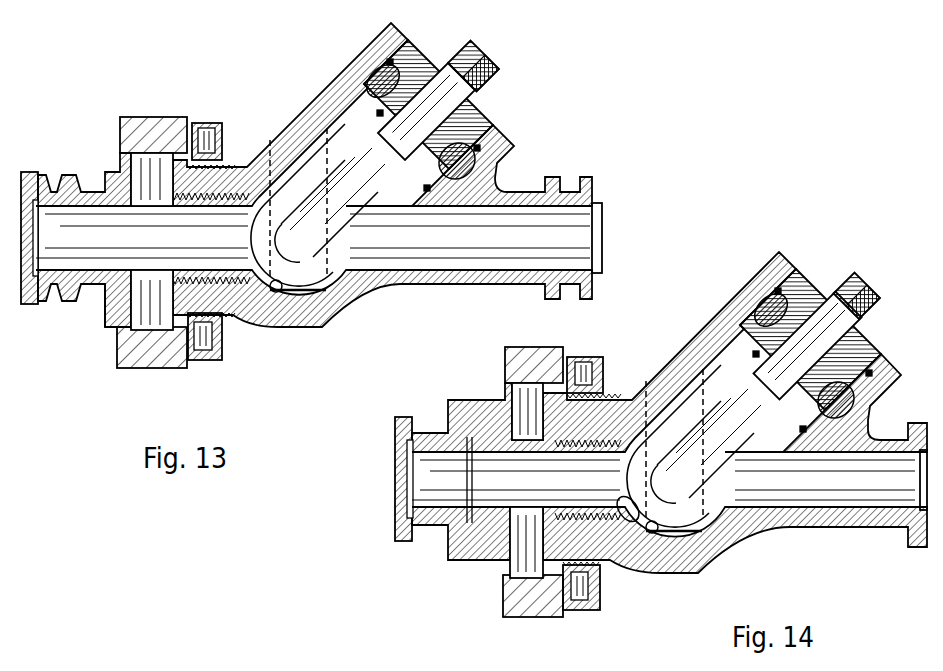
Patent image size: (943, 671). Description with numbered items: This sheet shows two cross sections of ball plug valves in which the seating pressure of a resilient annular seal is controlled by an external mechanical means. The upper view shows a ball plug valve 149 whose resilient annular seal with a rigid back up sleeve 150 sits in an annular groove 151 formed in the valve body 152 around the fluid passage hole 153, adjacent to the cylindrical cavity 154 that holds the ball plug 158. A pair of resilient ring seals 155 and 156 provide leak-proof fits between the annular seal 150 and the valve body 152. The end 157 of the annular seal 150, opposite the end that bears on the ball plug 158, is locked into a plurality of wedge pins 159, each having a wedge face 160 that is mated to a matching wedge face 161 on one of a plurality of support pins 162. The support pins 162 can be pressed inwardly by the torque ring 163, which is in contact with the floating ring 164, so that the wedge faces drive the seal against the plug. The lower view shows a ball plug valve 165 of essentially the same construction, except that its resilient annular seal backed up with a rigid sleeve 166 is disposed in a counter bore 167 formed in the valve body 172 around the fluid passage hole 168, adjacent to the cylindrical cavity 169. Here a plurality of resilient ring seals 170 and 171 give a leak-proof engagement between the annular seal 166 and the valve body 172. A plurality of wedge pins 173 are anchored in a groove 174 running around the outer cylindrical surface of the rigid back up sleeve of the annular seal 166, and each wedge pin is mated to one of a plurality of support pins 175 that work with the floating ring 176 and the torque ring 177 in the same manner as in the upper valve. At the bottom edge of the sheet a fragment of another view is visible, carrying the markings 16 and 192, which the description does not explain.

In FIG. 13, the ball plug valve 149 is at (279, 293).
In FIG. 13, the resilient annular seal with rigid back up sleeve 150 is at (150, 283).
In FIG. 13, the annular groove 151 is at (57, 290).
In FIG. 13, the valve body 152 is at (340, 300).
In FIG. 13, the fluid passage hole 153 is at (78, 236).
In FIG. 13, the cylindrical cavity 154 is at (272, 300).
In FIG. 13, the resilient ring seal 155 is at (158, 355).
In FIG. 13, the resilient ring seal 156 is at (232, 316).
In FIG. 13, the end of resilient annular seal 157 is at (240, 166).
In FIG. 13, the ball plug 158 is at (405, 285).
In FIG. 13, the wedge pin 159 is at (135, 366).
In FIG. 13, the wedge face 160 is at (110, 170).
In FIG. 13, the wedge face 161 is at (163, 152).
In FIG. 13, the support pin 162 is at (135, 312).
In FIG. 13, the torque ring 163 is at (192, 122).
In FIG. 13, the floating ring 164 is at (140, 116).
In FIG. 14, the ball plug valve 165 is at (655, 535).
In FIG. 14, the resilient annular seal with rigid back up sleeve 166 is at (518, 618).
In FIG. 14, the counter bore 167 is at (640, 487).
In FIG. 14, the fluid passage hole 168 is at (437, 475).
In FIG. 14, the cylindrical cavity 169 is at (710, 560).
In FIG. 14, the resilient ring seal 170 is at (535, 528).
In FIG. 14, the resilient ring seal 171 is at (630, 395).
In FIG. 14, the valve body 172 is at (747, 551).
In FIG. 14, the wedge pin 173 is at (500, 562).
In FIG. 14, the groove 174 is at (410, 498).
In FIG. 14, the support pin 175 is at (527, 347).
In FIG. 14, the floating ring 176 is at (533, 398).
In FIG. 14, the torque ring 177 is at (568, 356).
In FIG. 14, the section line 16 is at (78, 664).
In FIG. 14, the component 192 is at (168, 662).